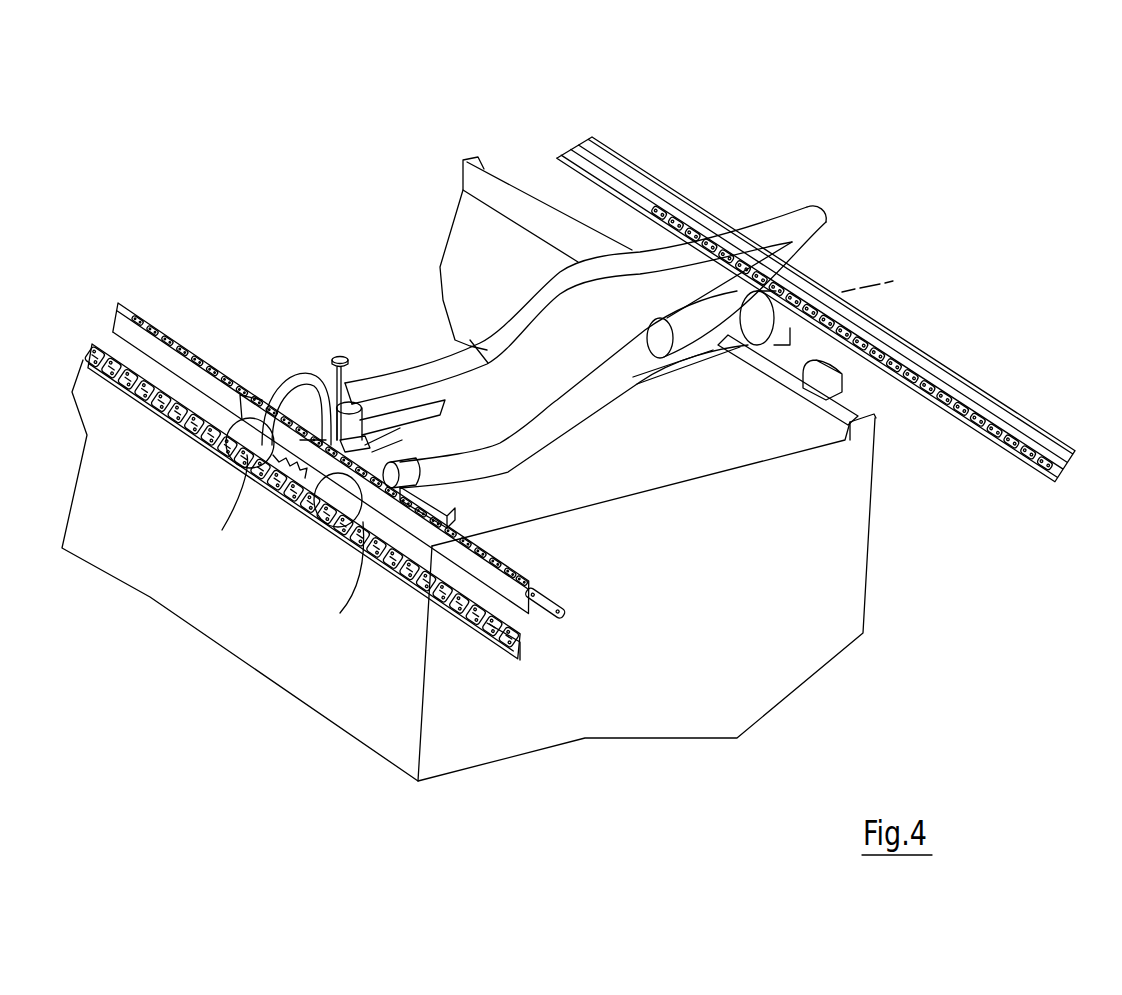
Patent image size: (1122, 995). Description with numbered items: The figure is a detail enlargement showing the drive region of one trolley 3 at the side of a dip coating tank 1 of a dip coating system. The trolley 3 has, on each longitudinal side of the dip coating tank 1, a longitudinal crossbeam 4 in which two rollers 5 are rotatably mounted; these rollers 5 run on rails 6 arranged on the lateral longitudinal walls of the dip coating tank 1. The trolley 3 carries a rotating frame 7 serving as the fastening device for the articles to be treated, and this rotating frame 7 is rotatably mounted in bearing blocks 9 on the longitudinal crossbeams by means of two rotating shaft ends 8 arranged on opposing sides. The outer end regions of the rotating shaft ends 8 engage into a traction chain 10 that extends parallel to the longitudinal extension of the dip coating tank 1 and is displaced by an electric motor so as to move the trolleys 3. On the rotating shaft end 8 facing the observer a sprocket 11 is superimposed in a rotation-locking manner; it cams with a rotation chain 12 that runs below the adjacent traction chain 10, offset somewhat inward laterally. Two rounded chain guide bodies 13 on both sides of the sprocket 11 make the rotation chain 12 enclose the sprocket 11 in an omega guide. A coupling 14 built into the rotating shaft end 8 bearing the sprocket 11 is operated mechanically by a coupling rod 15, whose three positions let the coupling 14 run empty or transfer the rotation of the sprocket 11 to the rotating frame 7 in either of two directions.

The dip coating tank 1 is at (790, 567).
The trolley 3 is at (490, 452).
The longitudinal crossbeam 4 is at (862, 308).
The roller 5 is at (828, 373).
The rail 6 is at (496, 170).
The rotating frame 7 is at (782, 222).
The rotating shaft end 8 is at (364, 385).
The bearing block 9 is at (315, 380).
The traction chain 10 is at (170, 335).
The sprocket 11 is at (260, 380).
The rotation chain 12 is at (487, 623).
The chain guide body 13 is at (222, 530).
The coupling 14 is at (340, 356).
The coupling rod 15 is at (313, 372).